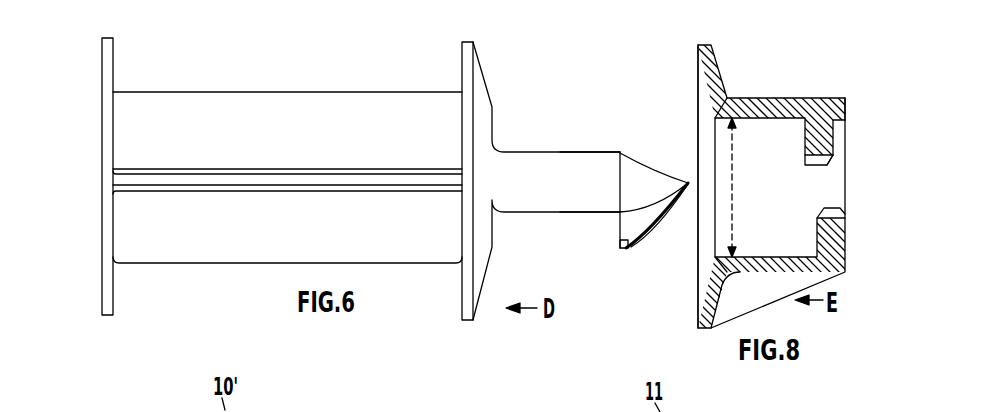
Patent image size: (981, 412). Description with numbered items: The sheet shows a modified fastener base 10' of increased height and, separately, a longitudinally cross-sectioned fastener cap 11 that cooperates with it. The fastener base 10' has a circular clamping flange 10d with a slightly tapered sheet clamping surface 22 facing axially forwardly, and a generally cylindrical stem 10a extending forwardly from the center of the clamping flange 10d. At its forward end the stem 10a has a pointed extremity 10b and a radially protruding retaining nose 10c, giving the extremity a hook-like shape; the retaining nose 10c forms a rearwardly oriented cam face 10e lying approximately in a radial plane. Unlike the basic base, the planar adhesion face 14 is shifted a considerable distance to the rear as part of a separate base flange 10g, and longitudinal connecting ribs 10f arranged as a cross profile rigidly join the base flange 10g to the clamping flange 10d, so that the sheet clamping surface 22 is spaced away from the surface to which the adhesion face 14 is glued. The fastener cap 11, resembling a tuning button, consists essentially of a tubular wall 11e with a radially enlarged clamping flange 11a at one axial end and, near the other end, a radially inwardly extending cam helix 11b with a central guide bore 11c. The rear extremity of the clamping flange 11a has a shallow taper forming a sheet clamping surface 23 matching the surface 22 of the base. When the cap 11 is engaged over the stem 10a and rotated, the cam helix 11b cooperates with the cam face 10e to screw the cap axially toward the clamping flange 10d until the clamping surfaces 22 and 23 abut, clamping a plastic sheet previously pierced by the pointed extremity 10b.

In FIG. 6, the modified fastener base 10' is at (287, 145).
In FIG. 6, the stem 10a is at (530, 198).
In FIG. 6, the pointed extremity 10b is at (630, 180).
In FIG. 6, the retaining nose 10c is at (628, 240).
In FIG. 6, the clamping flange 10d is at (480, 100).
In FIG. 6, the cam face 10e is at (622, 238).
In FIG. 6, the connecting ribs 10f is at (185, 155).
In FIG. 6, the base flange 10g is at (113, 66).
In FIG. 6, the adhesion face 14 is at (104, 316).
In FIG. 6, the sheet clamping surface 22 is at (480, 125).
In FIG. 8, the fastener cap 11 is at (772, 98).
In FIG. 8, the clamping flange 11a is at (712, 298).
In FIG. 8, the cam helix 11b is at (823, 237).
In FIG. 8, the guide bore 11c is at (822, 157).
In FIG. 8, the tubular wall 11e is at (793, 105).
In FIG. 8, the sheet clamping surface 23 is at (708, 99).